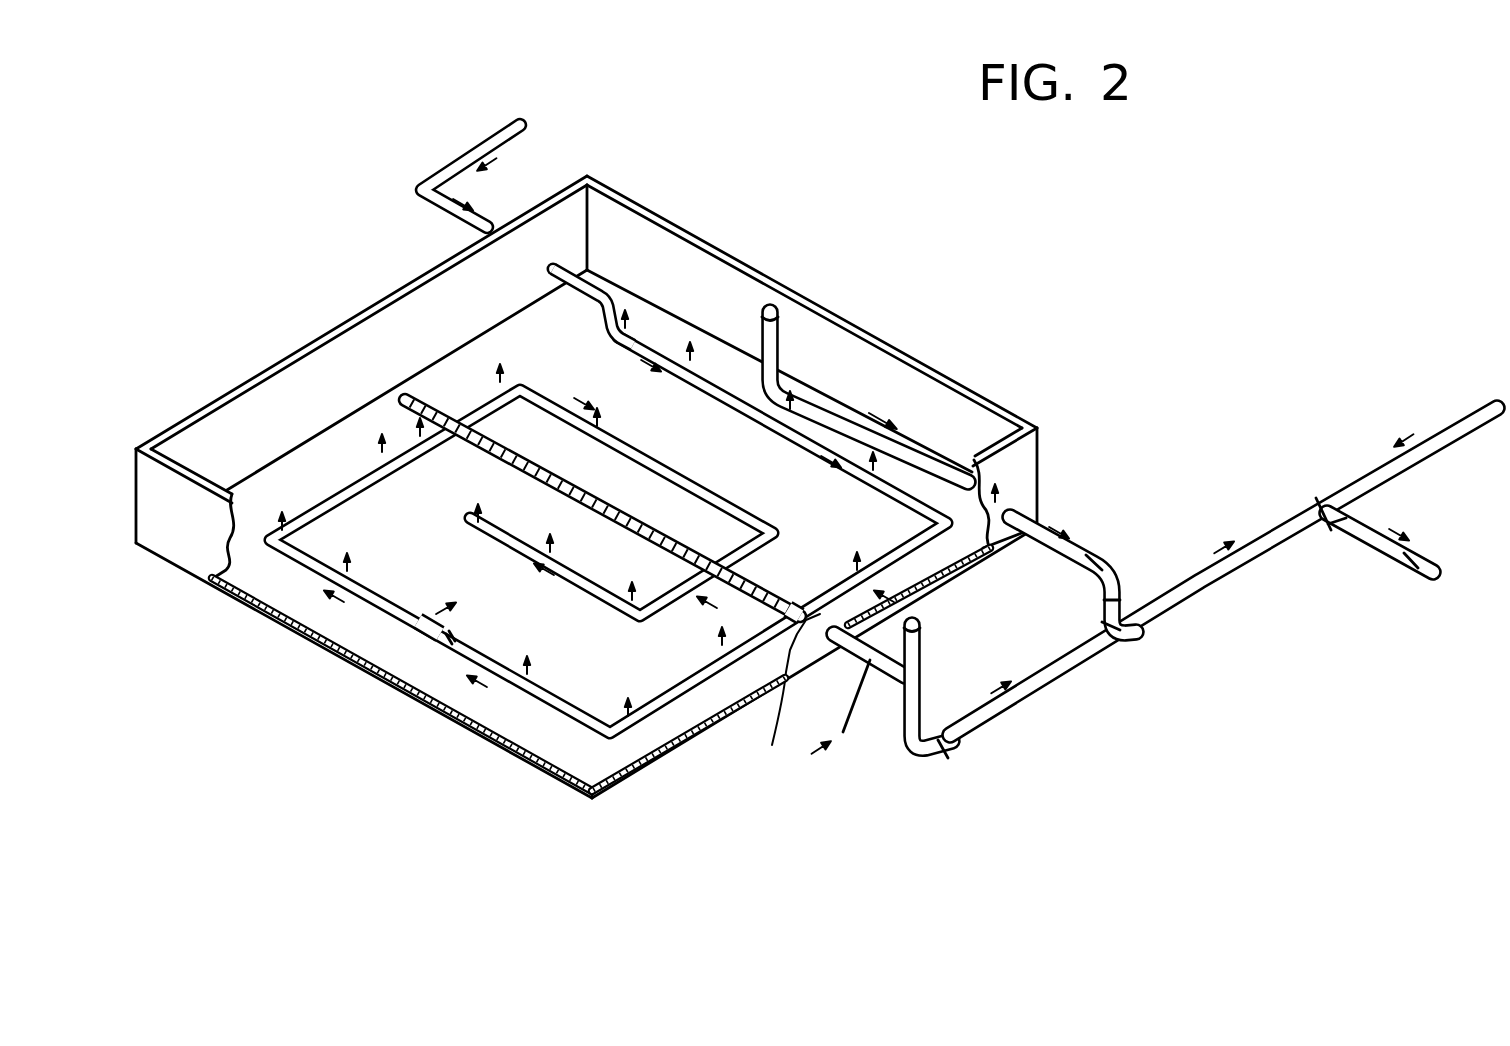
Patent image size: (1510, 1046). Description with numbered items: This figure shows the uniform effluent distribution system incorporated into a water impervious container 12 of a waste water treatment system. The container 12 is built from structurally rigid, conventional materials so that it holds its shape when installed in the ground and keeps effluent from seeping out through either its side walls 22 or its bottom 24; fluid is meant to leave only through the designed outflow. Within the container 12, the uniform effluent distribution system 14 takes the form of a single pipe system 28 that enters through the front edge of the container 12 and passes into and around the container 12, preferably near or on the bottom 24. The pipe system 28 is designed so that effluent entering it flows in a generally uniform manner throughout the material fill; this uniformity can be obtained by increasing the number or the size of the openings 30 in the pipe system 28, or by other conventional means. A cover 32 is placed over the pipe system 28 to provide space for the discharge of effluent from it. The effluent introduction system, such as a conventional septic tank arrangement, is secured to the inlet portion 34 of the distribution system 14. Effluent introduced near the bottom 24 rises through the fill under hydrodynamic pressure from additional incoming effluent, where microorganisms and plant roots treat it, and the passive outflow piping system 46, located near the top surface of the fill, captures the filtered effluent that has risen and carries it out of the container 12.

The water impervious container 12 is at (344, 318).
The uniform effluent distribution system 14 is at (593, 274).
The side walls 22 is at (838, 350).
The bottom 24 is at (760, 470).
The pipe system 28 is at (540, 702).
The openings 30 is at (610, 428).
The cover 32 is at (440, 640).
The inlet portion 34 is at (463, 156).
The outflow piping system 46 is at (522, 468).